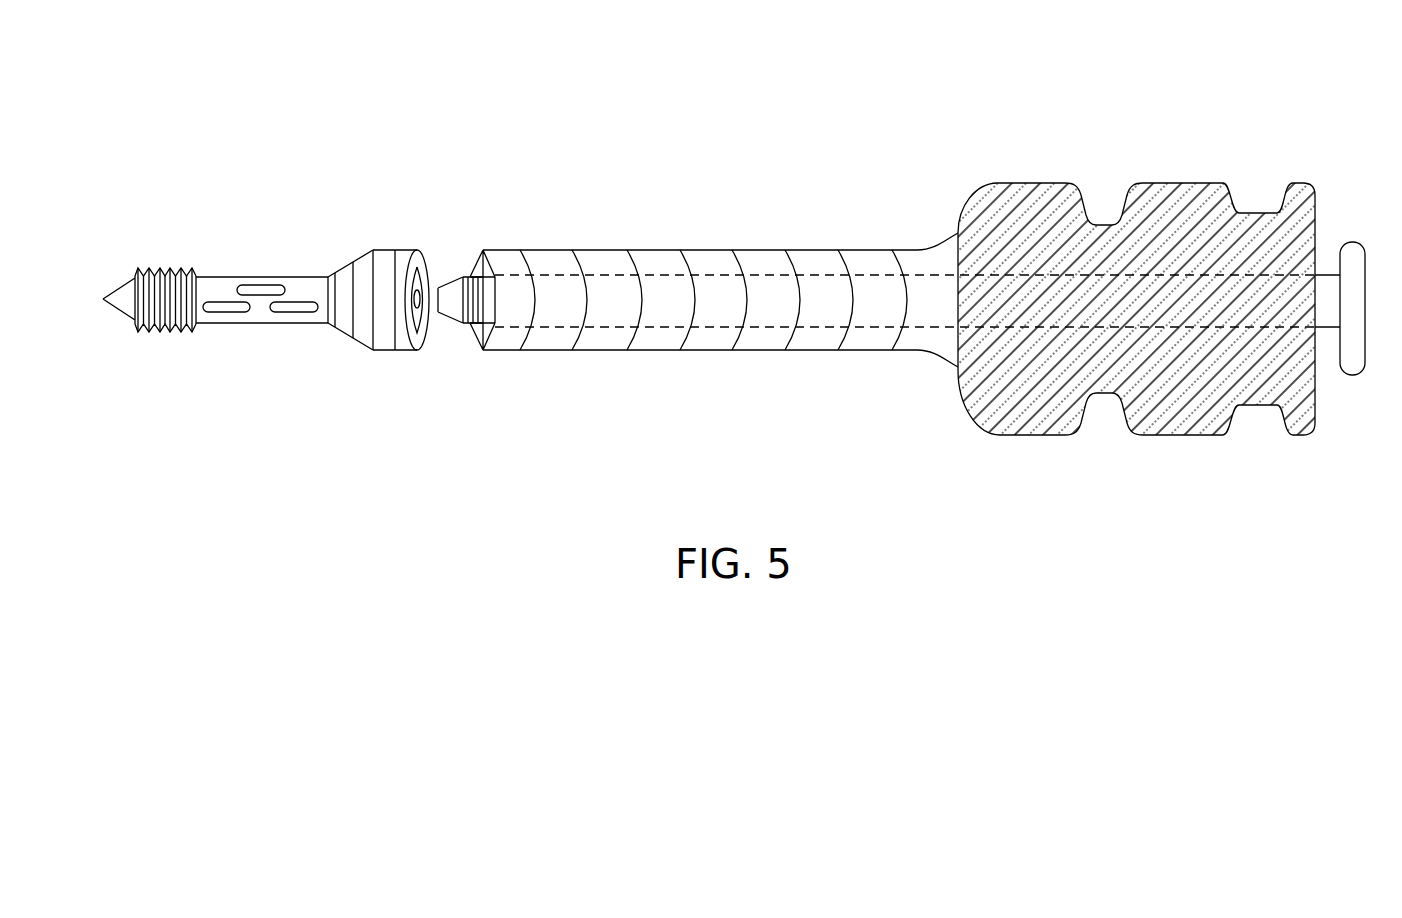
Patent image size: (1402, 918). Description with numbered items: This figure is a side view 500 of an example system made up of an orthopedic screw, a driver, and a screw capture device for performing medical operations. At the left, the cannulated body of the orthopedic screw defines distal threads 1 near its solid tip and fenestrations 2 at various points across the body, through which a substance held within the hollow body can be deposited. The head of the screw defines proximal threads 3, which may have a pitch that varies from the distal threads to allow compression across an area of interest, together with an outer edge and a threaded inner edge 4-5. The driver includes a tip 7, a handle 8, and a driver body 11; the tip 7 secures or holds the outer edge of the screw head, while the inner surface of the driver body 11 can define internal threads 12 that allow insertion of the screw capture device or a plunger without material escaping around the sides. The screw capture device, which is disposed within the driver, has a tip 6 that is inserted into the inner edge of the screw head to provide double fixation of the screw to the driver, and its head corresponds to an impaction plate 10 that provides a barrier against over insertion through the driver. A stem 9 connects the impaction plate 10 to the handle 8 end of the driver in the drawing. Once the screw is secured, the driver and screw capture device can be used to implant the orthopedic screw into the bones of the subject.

The side view 500 is at (1242, 48).
The distal threads 1 is at (158, 272).
The fenestrations 2 is at (258, 287).
The proximal threads 3 is at (387, 250).
The outer edge and inner edge 4-5 is at (430, 317).
The tip of the screw capture device 6 is at (455, 265).
The tip of the driver 7 is at (498, 250).
The handle 8 is at (1038, 183).
The handle stem 9 is at (1322, 272).
The impaction plate 10 is at (1353, 375).
The driver body 11 is at (807, 250).
The internal threads 12 is at (574, 230).